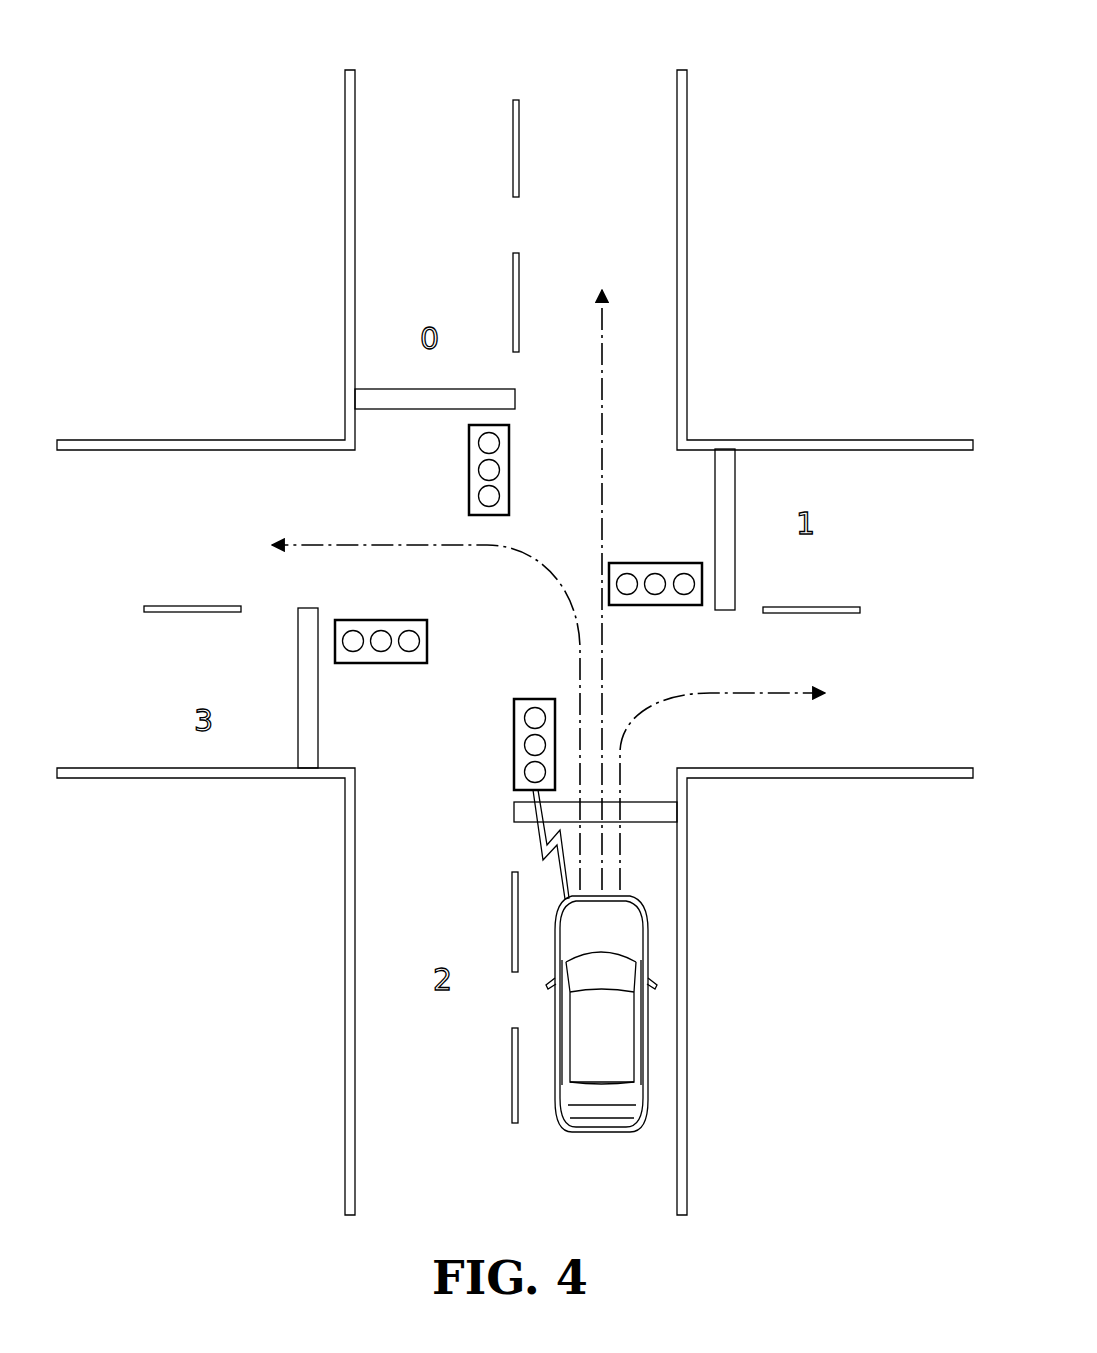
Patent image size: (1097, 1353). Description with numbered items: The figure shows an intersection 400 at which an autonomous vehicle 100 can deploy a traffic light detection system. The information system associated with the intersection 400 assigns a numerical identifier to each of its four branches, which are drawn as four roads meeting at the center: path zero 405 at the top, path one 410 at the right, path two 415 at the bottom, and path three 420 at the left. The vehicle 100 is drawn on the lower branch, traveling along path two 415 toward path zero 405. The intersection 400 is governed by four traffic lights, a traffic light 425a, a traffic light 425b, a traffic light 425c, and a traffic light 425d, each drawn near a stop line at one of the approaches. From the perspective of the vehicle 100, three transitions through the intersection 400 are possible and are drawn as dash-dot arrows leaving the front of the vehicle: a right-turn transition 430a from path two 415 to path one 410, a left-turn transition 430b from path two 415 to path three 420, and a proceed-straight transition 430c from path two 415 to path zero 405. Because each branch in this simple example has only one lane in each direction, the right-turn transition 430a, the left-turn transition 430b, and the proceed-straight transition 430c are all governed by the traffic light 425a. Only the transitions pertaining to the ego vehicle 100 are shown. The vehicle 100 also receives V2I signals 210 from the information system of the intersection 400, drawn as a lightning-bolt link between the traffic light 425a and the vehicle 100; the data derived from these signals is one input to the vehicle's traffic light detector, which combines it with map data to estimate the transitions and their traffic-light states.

The vehicle 100 is at (648, 1035).
The V2I signals 210 is at (535, 835).
The intersection 400 is at (797, 64).
The Path 0 405 is at (466, 226).
The Path 1 410 is at (850, 657).
The Path 2 415 is at (470, 1018).
The Path 3 420 is at (170, 656).
The traffic light 425a is at (538, 699).
The traffic light 425b is at (383, 663).
The traffic light 425c is at (469, 482).
The traffic light 425d is at (630, 563).
The right-turn transition 430a is at (727, 693).
The left-turn transition 430b is at (352, 545).
The proceed-straight transition 430c is at (602, 368).